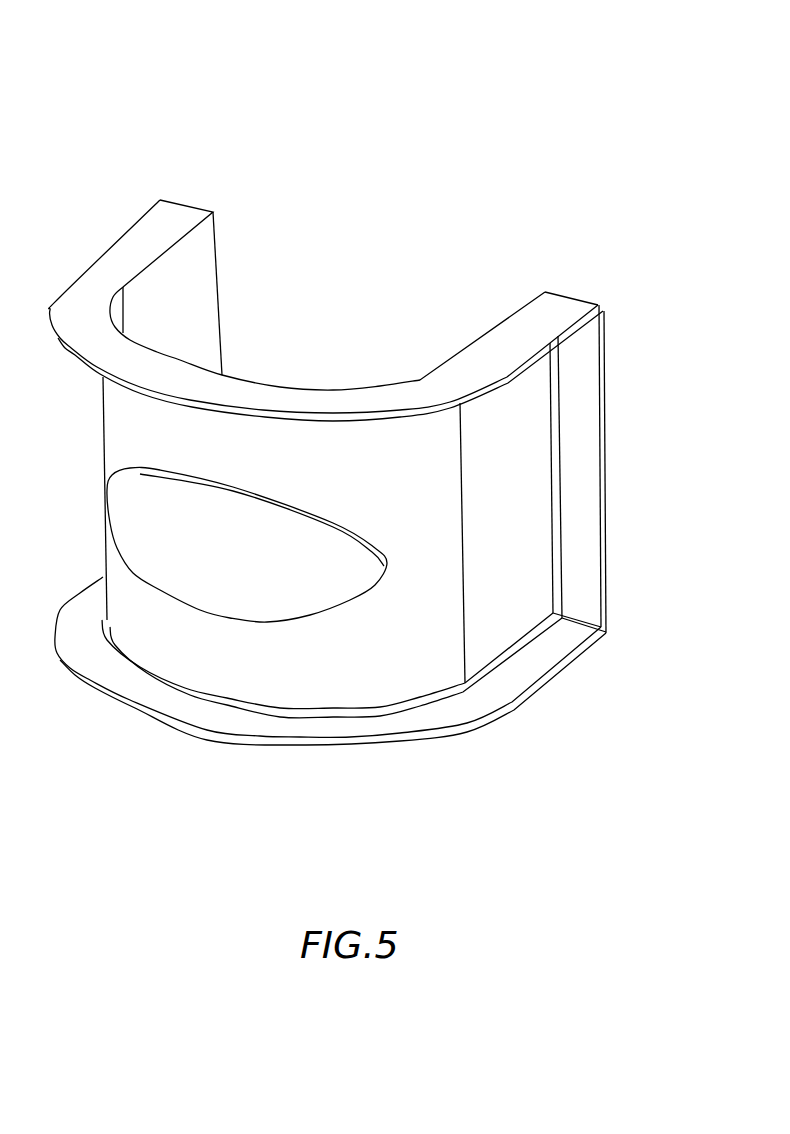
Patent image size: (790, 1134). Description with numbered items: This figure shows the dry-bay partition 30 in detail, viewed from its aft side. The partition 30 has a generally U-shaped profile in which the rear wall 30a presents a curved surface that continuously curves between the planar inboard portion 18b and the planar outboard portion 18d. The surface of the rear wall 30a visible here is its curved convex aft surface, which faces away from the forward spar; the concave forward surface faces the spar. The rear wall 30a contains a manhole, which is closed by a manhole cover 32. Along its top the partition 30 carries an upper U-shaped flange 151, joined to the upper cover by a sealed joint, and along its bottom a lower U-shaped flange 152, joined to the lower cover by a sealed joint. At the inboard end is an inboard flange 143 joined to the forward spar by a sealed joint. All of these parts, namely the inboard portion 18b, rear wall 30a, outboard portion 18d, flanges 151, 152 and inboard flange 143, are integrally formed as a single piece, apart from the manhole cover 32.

The dry-bay partition 30 is at (128, 103).
The upper U-shaped flange 151 is at (140, 247).
The outboard portion 18d is at (188, 287).
The inboard portion 18b is at (532, 513).
The inboard flange 143 is at (587, 440).
The manhole cover 32 is at (170, 573).
The rear wall 30a is at (207, 658).
The lower U-shaped flange 152 is at (365, 725).